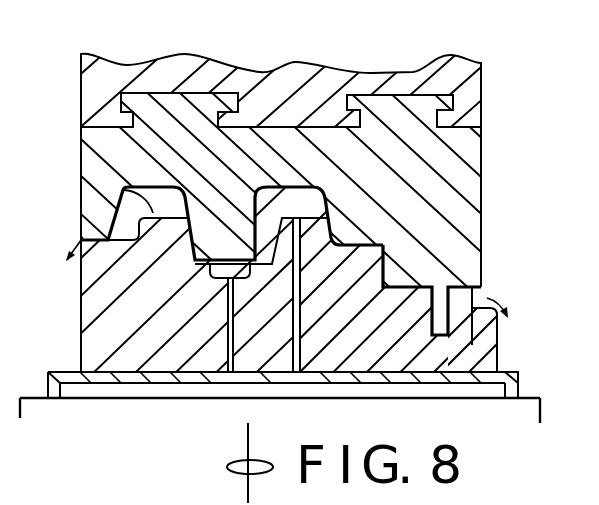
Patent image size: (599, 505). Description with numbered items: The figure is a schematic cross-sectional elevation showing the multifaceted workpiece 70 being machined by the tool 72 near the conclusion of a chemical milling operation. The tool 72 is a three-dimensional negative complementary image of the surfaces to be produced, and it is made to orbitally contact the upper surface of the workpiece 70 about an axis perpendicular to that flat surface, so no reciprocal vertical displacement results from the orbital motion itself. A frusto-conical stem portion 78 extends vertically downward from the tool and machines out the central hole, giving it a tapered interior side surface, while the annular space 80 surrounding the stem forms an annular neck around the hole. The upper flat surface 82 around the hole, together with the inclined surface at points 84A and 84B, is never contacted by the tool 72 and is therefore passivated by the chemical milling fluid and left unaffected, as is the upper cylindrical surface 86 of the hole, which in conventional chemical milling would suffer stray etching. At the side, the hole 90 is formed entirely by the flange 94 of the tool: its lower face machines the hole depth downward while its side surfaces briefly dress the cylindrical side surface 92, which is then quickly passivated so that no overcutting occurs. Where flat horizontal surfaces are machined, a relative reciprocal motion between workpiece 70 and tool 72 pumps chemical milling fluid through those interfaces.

The workpiece 70 is at (110, 293).
The tool 72 is at (450, 205).
The frusto-conical stem portion 78 is at (236, 212).
The annular space 80 is at (160, 196).
The upper flat surface 82 is at (123, 190).
The point on inclined surface 84A is at (420, 244).
The point on inclined surface 84B is at (440, 287).
The upper cylindrical surface 86 is at (112, 337).
The hole 90 is at (470, 322).
The surface 92 is at (472, 298).
The flange 94 is at (455, 318).